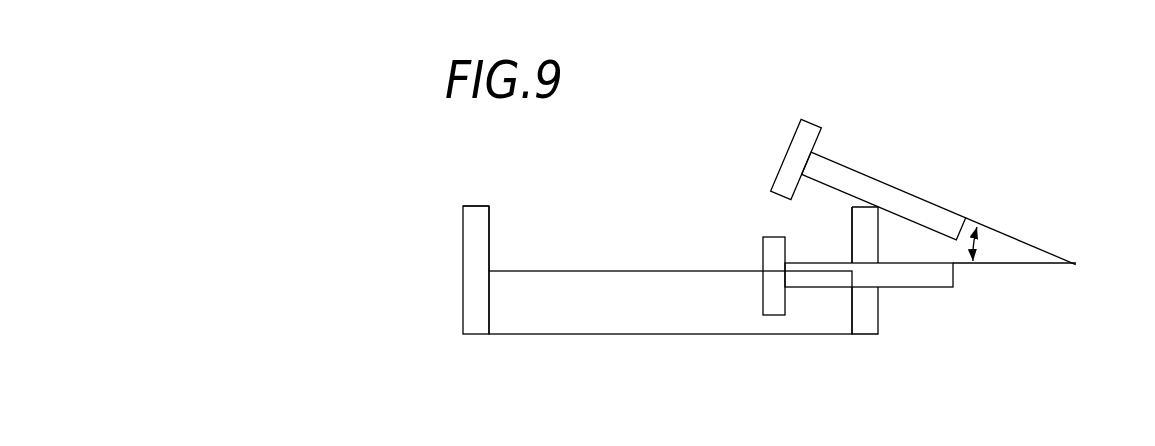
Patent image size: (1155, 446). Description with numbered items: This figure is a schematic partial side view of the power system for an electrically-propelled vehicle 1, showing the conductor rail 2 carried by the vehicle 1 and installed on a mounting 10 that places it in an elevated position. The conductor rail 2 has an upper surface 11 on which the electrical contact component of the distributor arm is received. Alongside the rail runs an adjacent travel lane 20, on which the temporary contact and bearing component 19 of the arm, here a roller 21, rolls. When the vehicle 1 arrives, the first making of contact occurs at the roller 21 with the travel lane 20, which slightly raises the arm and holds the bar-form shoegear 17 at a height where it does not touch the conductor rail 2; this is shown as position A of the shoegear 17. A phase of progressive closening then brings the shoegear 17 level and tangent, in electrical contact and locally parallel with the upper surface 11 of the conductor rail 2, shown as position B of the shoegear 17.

The vehicle 1 is at (402, 222).
The conductor rail 2 is at (475, 193).
The mounting 10 is at (497, 235).
The upper surface 11 is at (478, 205).
The shoegear 17 is at (875, 177).
The temporary contact and bearing component 19 is at (756, 295).
The travel lane 20 is at (567, 265).
The roller 21 is at (780, 188).